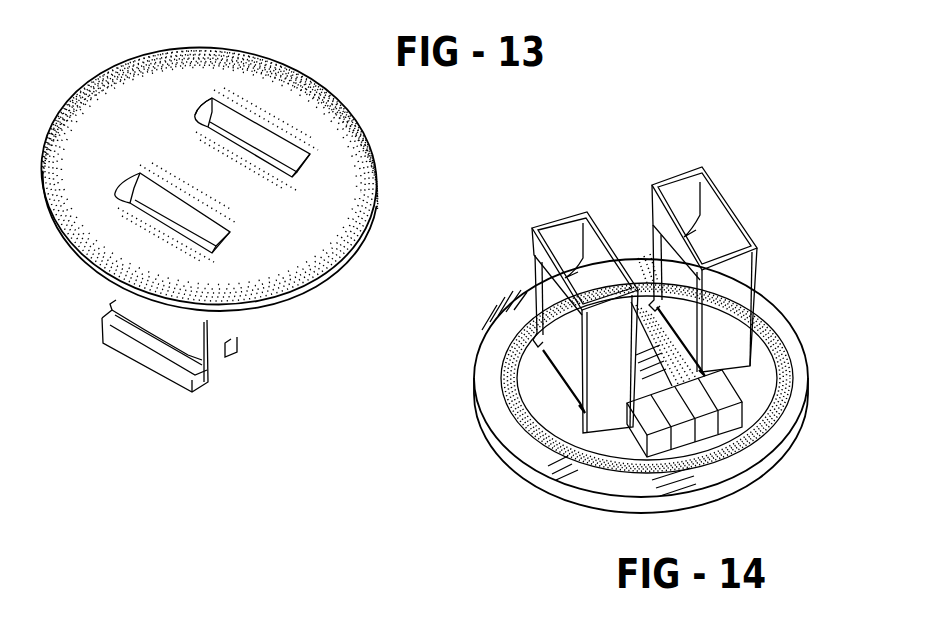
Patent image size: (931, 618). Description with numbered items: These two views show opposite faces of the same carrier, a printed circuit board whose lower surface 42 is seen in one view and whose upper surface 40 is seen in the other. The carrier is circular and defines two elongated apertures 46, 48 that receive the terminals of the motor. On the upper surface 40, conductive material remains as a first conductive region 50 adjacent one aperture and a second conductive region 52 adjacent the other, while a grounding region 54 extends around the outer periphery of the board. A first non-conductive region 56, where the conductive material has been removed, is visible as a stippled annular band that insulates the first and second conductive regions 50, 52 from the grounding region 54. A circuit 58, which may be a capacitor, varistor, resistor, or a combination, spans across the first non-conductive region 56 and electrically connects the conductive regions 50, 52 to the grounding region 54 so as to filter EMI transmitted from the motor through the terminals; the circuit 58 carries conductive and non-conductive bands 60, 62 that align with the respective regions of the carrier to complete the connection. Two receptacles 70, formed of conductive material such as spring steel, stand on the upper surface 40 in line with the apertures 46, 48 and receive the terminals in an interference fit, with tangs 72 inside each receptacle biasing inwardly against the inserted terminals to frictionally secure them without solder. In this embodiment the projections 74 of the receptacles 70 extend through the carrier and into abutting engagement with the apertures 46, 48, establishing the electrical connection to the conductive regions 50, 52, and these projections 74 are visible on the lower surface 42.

In FIG. 14, the upper surface 40 is at (518, 282).
In FIG. 13, the lower surface 42 is at (352, 196).
In FIG. 13, the aperture 46 is at (97, 281).
In FIG. 13, the aperture 48 is at (247, 130).
In FIG. 14, the first conductive region 50 is at (527, 380).
In FIG. 14, the second conductive region 52 is at (765, 349).
In FIG. 14, the grounding region 54 is at (806, 352).
In FIG. 13, the first non-conductive region 56 is at (312, 247).
In FIG. 14, the first non-conductive region 56 is at (516, 410).
In FIG. 14, the circuit 58 is at (708, 452).
In FIG. 14, the conductive band 60 is at (750, 414).
In FIG. 14, the non-conductive band 62 is at (718, 432).
In FIG. 13, the receptacle 70 is at (172, 376).
In FIG. 14, the receptacle 70 is at (682, 178).
In FIG. 14, the tang 72 is at (673, 277).
In FIG. 13, the projection 74 is at (207, 110).